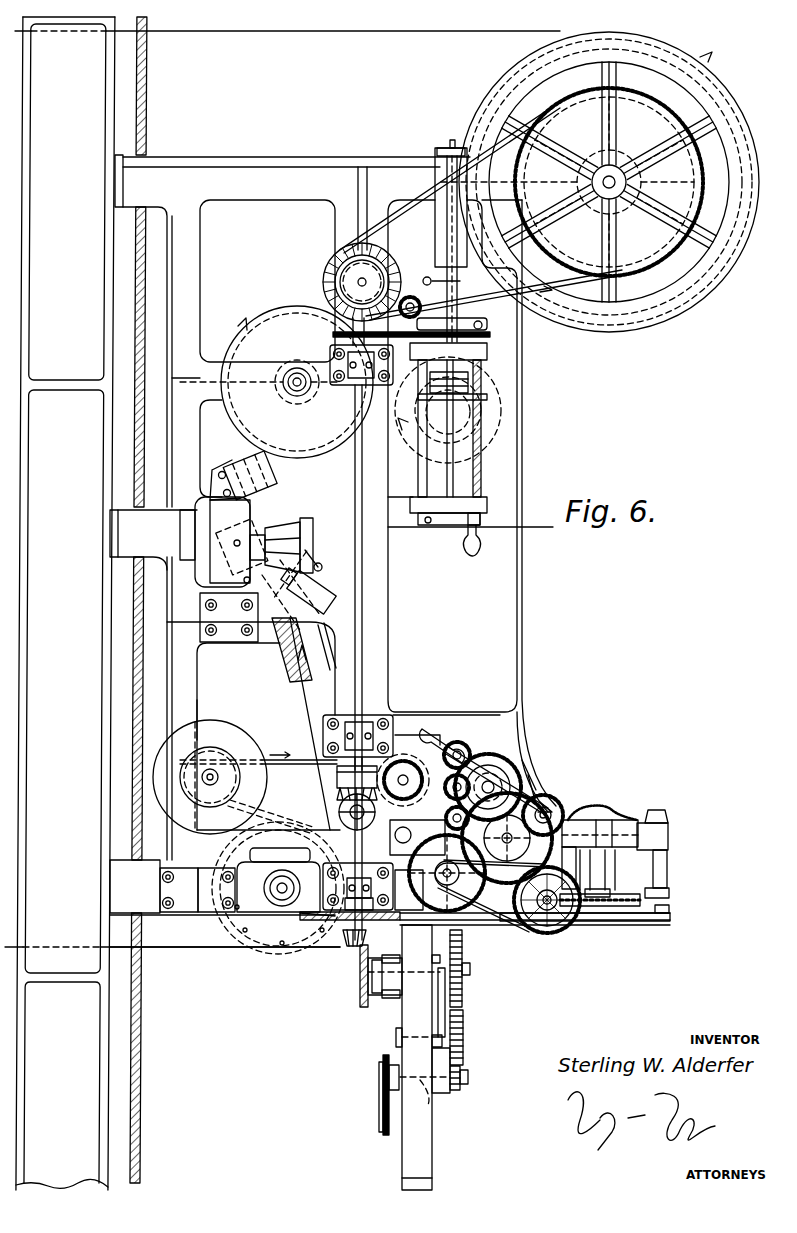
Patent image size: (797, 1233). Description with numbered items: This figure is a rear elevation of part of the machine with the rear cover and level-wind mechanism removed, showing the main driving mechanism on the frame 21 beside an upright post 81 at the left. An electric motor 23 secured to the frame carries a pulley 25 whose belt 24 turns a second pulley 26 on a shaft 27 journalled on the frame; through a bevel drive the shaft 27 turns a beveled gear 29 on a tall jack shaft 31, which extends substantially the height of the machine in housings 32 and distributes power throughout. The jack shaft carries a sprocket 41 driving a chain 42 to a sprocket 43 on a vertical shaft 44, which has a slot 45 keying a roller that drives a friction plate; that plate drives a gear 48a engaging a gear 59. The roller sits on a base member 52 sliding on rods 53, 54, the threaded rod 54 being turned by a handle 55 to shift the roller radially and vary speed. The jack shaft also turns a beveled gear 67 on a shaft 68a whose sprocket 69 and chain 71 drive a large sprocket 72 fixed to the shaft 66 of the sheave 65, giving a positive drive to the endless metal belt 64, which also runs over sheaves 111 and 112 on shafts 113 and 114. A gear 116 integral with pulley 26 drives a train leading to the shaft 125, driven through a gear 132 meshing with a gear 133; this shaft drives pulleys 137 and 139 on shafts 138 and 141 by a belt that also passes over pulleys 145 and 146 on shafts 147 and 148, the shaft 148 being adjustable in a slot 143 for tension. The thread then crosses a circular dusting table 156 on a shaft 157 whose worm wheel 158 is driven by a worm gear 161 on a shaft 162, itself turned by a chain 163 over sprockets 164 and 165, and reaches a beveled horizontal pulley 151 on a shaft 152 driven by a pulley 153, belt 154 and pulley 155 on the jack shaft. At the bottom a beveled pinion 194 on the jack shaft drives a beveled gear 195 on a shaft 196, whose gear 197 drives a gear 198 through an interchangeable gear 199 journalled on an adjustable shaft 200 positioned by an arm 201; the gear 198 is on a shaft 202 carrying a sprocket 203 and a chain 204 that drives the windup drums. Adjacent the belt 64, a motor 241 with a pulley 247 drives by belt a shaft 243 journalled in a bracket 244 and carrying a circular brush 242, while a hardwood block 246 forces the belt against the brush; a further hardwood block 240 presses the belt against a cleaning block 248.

The frame 21 is at (524, 592).
The electric motor 23 is at (203, 720).
The belt 24 is at (300, 758).
The pulley 25 is at (250, 763).
The second pulley 26 is at (320, 773).
The shaft 27 is at (338, 808).
The beveled gear 29 is at (335, 793).
The jack shaft 31 is at (364, 581).
The housings 32 is at (343, 385).
The sprocket 41 is at (345, 334).
The chain 42 is at (440, 318).
The sprocket 43 is at (500, 337).
The vertically extending shaft 44 is at (430, 490).
The slot 45 is at (472, 495).
The gear 48a is at (498, 427).
The base member 52 is at (472, 385).
The rod 53 is at (430, 470).
The threaded rod 54 is at (470, 470).
The handle 55 is at (470, 543).
The gear 59 is at (500, 405).
The endless metal belt 64 is at (412, 32).
The sheave 65 is at (520, 78).
The shaft 66 is at (620, 170).
The beveled gear 67 is at (328, 270).
The shaft 68a is at (338, 260).
The sprocket 69 is at (335, 281).
The chain 71 is at (440, 200).
The large sprocket 72 is at (516, 210).
The post 81 is at (147, 26).
The sheave 111 is at (240, 927).
The sheave 112 is at (232, 325).
The shaft 113 is at (288, 898).
The shaft 114 is at (290, 393).
The gear 116 is at (330, 858).
The shaft 125 is at (508, 752).
The gear 132 is at (556, 806).
The gear 133 is at (520, 748).
The pulley 137 is at (448, 790).
The shaft 138 is at (415, 762).
The pulley 139 is at (540, 795).
The shaft 141 is at (538, 775).
The slot 143 is at (455, 730).
The pulley 145 is at (465, 830).
The pulley 146 is at (460, 745).
The shaft 147 is at (450, 812).
The shaft 148 is at (460, 748).
The horizontally positioned pulley 151 is at (660, 806).
The shaft 152 is at (665, 866).
The pulley 153 is at (650, 925).
The belt 154 is at (630, 923).
The pulley 155 is at (340, 930).
The circular table 156 is at (635, 806).
The vertically extending shaft 157 is at (600, 866).
The worm wheel 158 is at (600, 905).
The worm gear 161 is at (553, 935).
The shaft 162 is at (530, 935).
The chain 163 is at (500, 920).
The sprocket 164 is at (462, 925).
The sprocket 165 is at (500, 930).
The beveled pinion gear 194 is at (352, 945).
The beveled gear 195 is at (362, 990).
The shaft 196 is at (420, 968).
The second gear 197 is at (458, 990).
The gear 198 is at (465, 1073).
The gear 199 is at (462, 1048).
The shaft 200 is at (438, 1040).
The arm 201 is at (440, 1002).
The journalled shaft 202 is at (432, 1105).
The sprocket 203 is at (383, 1078).
The chain 204 is at (385, 1115).
The hardwood block 240 is at (290, 664).
The electric motor 241 is at (197, 522).
The circular brush 242 is at (325, 592).
The shaft 243 is at (340, 645).
The bracket 244 is at (330, 520).
The hardwood block 246 is at (255, 572).
The pulley 247 is at (322, 568).
The cleaning block 248 is at (242, 464).